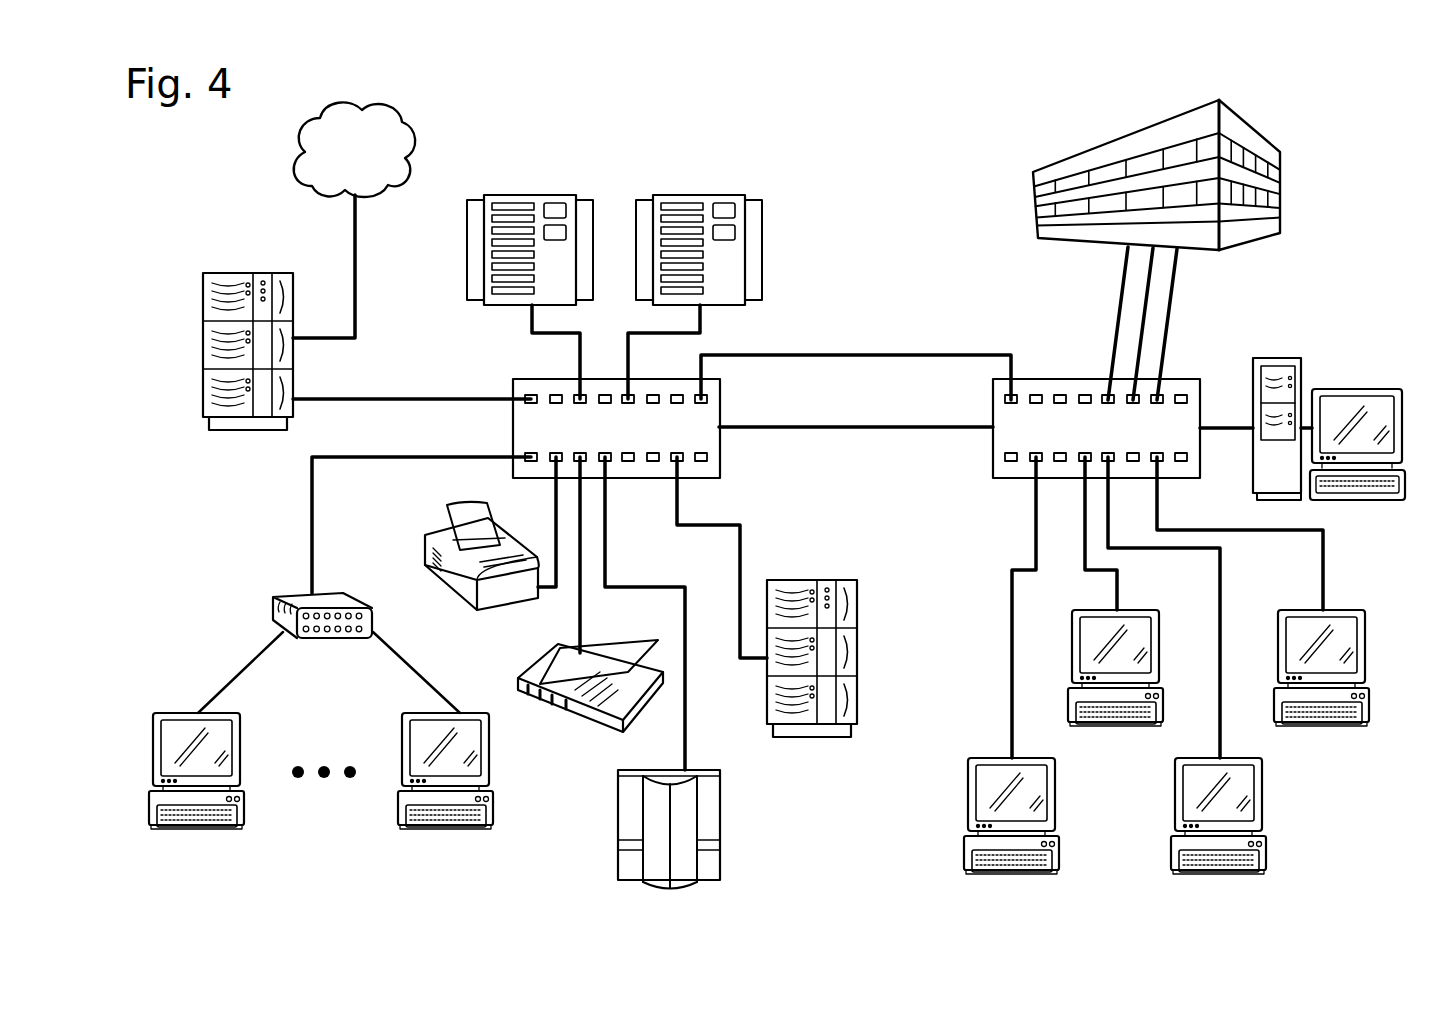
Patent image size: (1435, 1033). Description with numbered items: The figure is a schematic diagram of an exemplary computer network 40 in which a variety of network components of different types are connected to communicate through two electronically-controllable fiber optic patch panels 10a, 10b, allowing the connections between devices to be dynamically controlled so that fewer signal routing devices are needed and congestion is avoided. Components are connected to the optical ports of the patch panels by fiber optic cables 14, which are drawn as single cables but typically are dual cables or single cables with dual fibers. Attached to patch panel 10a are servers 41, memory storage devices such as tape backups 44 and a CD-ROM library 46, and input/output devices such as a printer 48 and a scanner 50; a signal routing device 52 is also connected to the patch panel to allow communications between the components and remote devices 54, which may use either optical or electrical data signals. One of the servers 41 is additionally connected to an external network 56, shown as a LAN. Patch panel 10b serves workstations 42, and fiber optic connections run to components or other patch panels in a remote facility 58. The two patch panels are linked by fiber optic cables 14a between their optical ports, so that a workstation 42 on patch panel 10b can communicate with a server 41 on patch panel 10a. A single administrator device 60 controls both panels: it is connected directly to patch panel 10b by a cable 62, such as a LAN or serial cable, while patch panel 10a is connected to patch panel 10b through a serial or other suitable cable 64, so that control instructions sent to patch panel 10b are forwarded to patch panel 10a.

The computer network 40 is at (872, 101).
The external network 56 is at (388, 110).
The server 41 is at (200, 298).
The tape backup 44 is at (556, 192).
The remote facility 58 is at (1282, 162).
The fiber optic patch panel 10a is at (510, 378).
The fiber optic patch panel 10b is at (1048, 378).
The fiber optic cable 14 is at (627, 347).
The fiber optic cable 14a is at (823, 353).
The cable 64 is at (822, 427).
The cable 62 is at (1213, 427).
The administrator device 60 is at (1350, 386).
The workstation 42 is at (1158, 633).
The signal routing device 52 is at (272, 605).
The remote devices 54 is at (386, 847).
The printer 48 is at (423, 553).
The scanner 50 is at (578, 715).
The CD-ROM library 46 is at (720, 803).